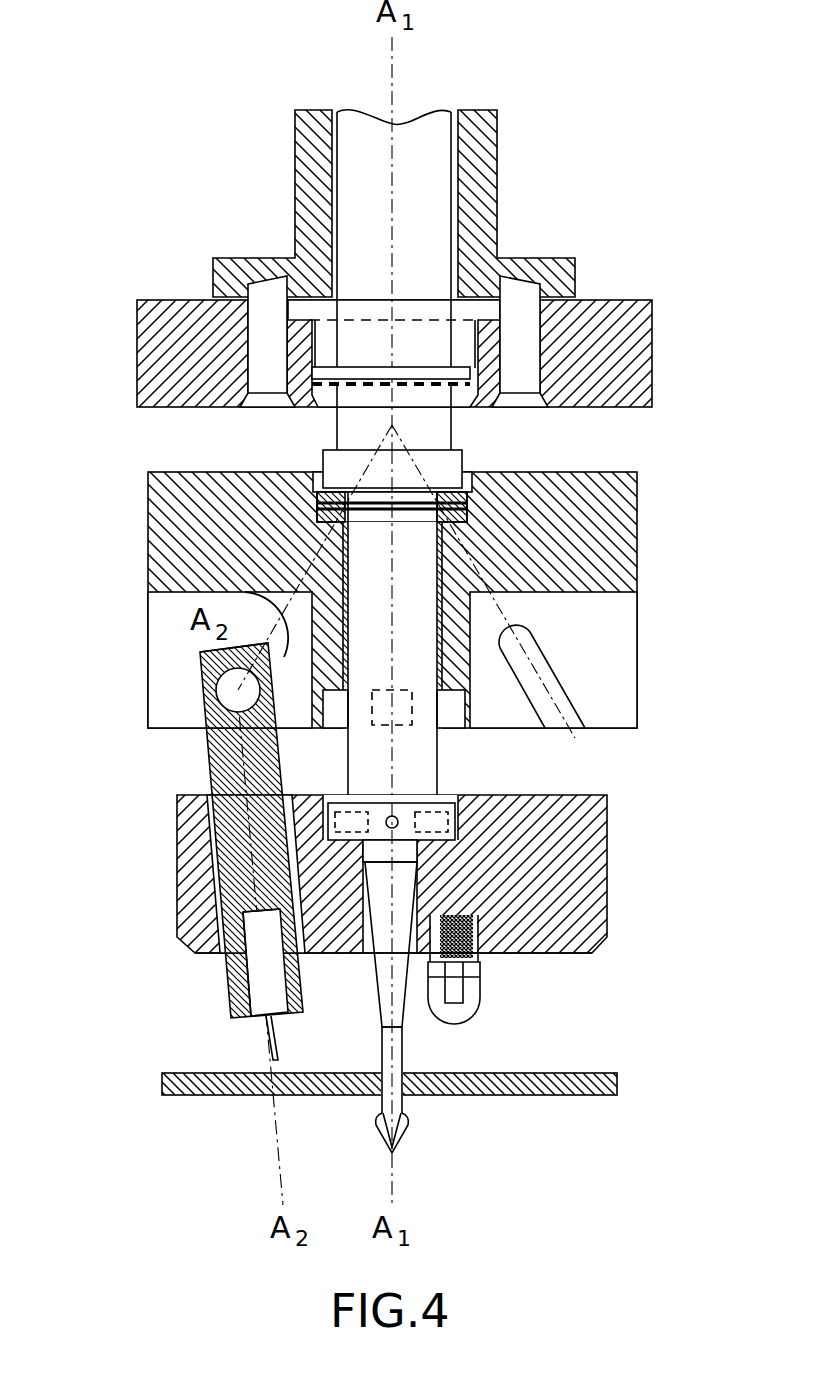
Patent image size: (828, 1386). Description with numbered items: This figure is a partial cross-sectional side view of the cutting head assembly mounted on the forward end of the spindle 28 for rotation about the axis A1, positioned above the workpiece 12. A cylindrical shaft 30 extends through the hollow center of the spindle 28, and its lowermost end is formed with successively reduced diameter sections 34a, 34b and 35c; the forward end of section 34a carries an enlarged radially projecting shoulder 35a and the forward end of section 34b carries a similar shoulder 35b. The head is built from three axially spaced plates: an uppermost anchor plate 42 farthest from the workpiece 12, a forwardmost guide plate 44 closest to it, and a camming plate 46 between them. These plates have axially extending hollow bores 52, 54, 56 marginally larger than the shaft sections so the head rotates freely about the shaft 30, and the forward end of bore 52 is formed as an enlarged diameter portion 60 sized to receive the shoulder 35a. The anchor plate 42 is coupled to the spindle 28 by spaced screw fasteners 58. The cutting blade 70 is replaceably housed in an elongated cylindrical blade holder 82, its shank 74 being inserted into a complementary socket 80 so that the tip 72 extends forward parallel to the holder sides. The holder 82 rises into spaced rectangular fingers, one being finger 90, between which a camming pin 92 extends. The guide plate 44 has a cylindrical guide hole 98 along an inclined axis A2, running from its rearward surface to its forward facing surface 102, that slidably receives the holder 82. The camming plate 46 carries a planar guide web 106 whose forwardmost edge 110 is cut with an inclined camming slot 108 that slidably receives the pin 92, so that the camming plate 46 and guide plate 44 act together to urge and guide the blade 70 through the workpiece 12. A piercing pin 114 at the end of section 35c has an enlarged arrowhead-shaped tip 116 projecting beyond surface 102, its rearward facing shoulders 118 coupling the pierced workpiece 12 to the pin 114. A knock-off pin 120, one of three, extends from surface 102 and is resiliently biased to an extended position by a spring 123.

The workpiece 12 is at (587, 1095).
The spindle 28 is at (300, 128).
The cylindrical shaft 30 is at (436, 165).
The shaft section 34a is at (428, 232).
The shaft section 34b is at (430, 617).
The radially projecting shoulder 35a is at (445, 471).
The radially projecting shoulder 35b is at (452, 803).
The shaft section 35c is at (408, 847).
The anchor plate 42 is at (137, 340).
The guide plate 44 is at (603, 810).
The camming plate 46 is at (150, 490).
The hollow bore 52 is at (460, 357).
The hollow bore 54 is at (455, 606).
The hollow bore 56 is at (341, 953).
The screw fasteners 58 is at (272, 292).
The enlarged diameter portion 60 is at (325, 400).
The cutting blade 70 is at (252, 982).
The tip 72 is at (277, 1058).
The shank 74 is at (248, 935).
The socket 80 is at (248, 994).
The blade holder 82 is at (222, 784).
The finger 90 is at (200, 660).
The camming pin 92 is at (216, 690).
The guide hole 98 is at (203, 832).
The forward facing surface 102 is at (583, 953).
The guide web 106 is at (150, 620).
The camming slot 108 is at (238, 598).
The forwardmost edge 110 is at (295, 733).
The piercing pin 114 is at (396, 1047).
The arrowhead-shaped tip 116 is at (396, 1142).
The rearward facing shoulders 118 is at (404, 1112).
The knock-off pin 120 is at (468, 1006).
The spring 123 is at (472, 952).